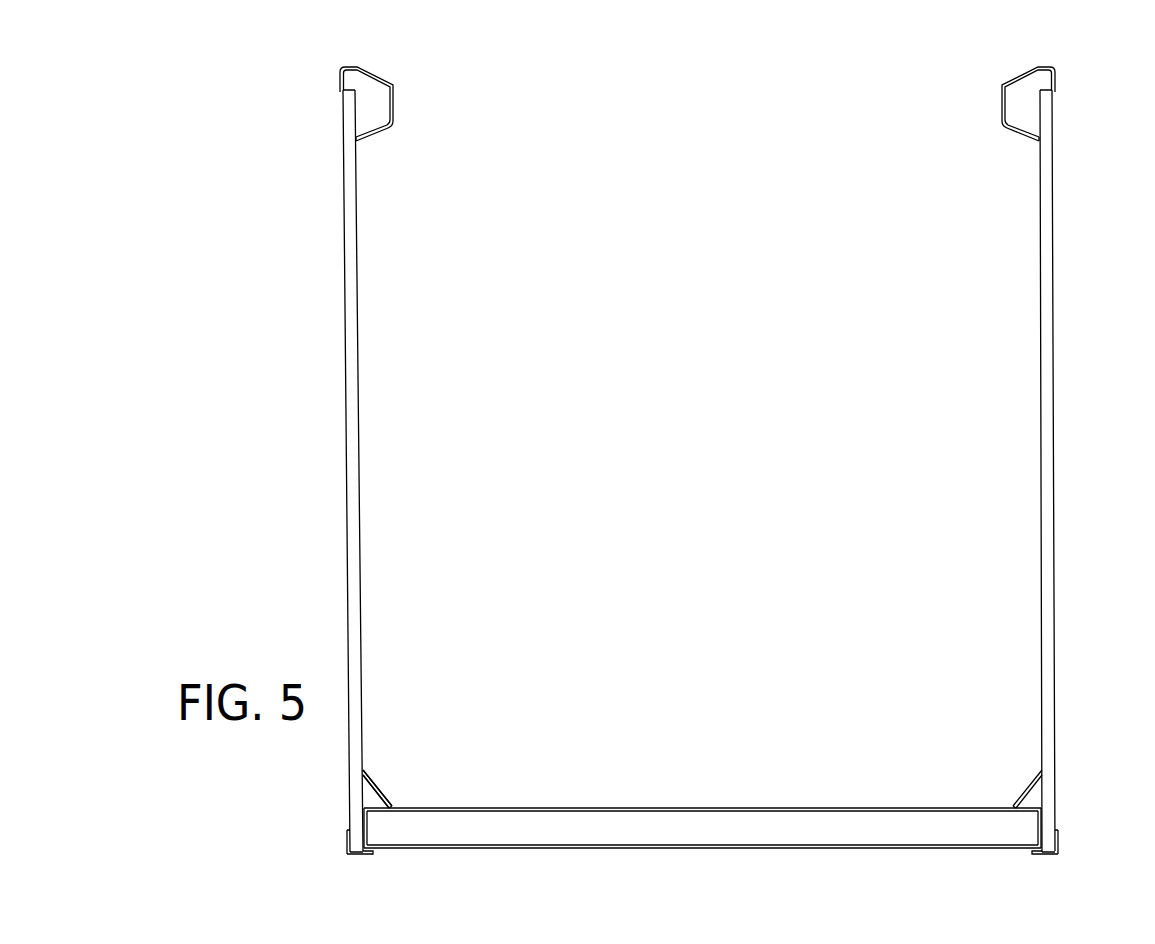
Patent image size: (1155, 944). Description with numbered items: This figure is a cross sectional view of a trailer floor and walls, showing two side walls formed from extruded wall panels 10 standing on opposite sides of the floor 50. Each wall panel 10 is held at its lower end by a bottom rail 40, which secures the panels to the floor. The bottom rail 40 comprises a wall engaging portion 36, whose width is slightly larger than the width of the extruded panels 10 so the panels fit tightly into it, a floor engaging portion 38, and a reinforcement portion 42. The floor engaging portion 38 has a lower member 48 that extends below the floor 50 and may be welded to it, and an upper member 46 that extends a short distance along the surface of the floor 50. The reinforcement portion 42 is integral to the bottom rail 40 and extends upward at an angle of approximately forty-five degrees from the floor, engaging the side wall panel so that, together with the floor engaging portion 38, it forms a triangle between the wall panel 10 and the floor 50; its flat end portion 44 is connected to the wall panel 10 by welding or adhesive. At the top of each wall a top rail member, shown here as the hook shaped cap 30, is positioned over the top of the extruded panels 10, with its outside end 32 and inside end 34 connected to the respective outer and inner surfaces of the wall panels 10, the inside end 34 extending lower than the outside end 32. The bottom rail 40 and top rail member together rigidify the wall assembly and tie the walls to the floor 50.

The extruded wall panel 10 is at (347, 311).
The top hook flange 30 is at (376, 76).
The outside end of top rail member 32 is at (341, 93).
The inside end of top rail member 34 is at (360, 141).
The wall engaging portion 36 is at (359, 856).
The floor engaging portion 38 is at (347, 841).
The bottom rail 40 is at (403, 765).
The reinforcement portion 42 is at (385, 794).
The flat end portion 44 is at (364, 771).
The upper member 46 is at (378, 810).
The lower member 48 is at (368, 856).
The floor 50 is at (655, 806).